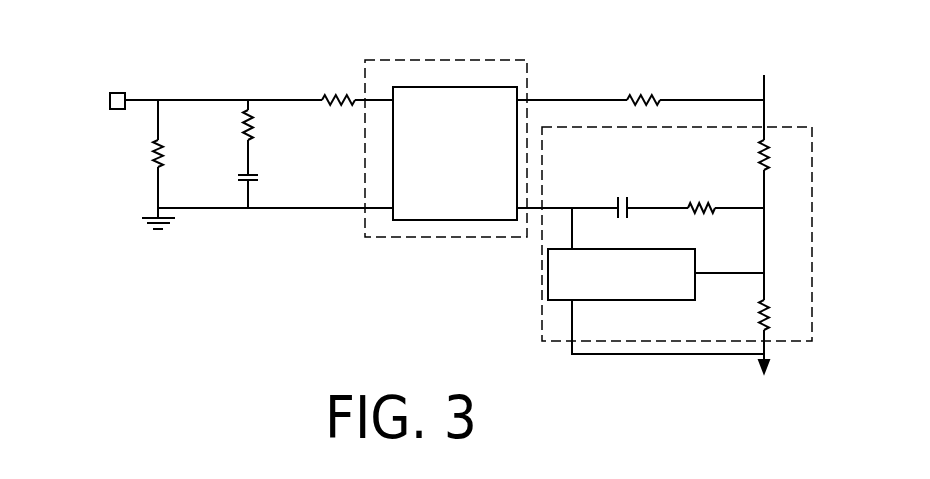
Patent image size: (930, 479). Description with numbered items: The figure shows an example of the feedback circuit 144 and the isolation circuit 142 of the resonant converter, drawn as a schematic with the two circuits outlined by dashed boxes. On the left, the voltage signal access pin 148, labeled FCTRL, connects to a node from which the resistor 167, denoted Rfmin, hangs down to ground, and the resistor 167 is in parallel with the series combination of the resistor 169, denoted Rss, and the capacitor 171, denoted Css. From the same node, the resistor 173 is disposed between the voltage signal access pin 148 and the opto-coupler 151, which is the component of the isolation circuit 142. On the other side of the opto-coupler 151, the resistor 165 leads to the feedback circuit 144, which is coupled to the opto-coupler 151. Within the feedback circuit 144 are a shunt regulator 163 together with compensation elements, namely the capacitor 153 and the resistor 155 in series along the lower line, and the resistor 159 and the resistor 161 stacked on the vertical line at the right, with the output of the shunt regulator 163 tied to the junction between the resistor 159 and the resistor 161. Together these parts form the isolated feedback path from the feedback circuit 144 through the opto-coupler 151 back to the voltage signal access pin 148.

The voltage signal access pin 148 is at (117, 92).
The resistor Rfmin 167 is at (157, 158).
The resistor Rss 169 is at (245, 133).
The capacitor Css 171 is at (238, 177).
The resistor 173 is at (332, 97).
The isolation circuit 142 is at (463, 58).
The opto-coupler 151 is at (490, 87).
The resistor 165 is at (653, 97).
The feedback circuit 144 is at (793, 127).
The resistor 159 is at (767, 163).
The capacitor 153 is at (625, 203).
The resistor 155 is at (708, 203).
The shunt regulator 163 is at (663, 300).
The resistor 161 is at (765, 307).